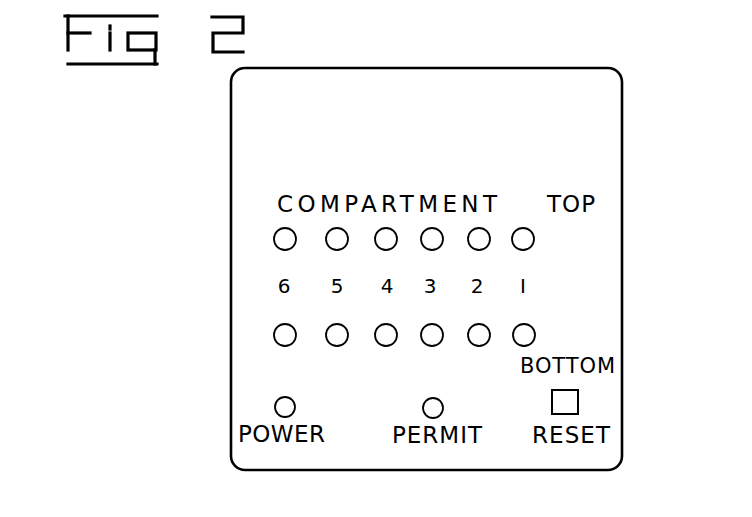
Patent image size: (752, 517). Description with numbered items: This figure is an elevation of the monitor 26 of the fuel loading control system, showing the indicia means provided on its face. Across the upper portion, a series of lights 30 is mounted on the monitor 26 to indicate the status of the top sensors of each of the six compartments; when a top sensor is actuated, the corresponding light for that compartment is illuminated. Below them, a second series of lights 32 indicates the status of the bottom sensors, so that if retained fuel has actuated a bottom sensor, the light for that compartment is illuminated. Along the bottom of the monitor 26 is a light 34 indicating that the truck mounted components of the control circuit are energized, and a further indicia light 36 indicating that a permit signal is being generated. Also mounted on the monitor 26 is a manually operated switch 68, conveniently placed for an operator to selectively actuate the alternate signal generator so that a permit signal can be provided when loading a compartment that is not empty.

The monitor 26 is at (622, 113).
The series of lights 30 is at (484, 229).
The series of lights 32 is at (377, 343).
The light 34 is at (294, 403).
The indicia light 36 is at (441, 402).
The manually operated switch 68 is at (579, 400).